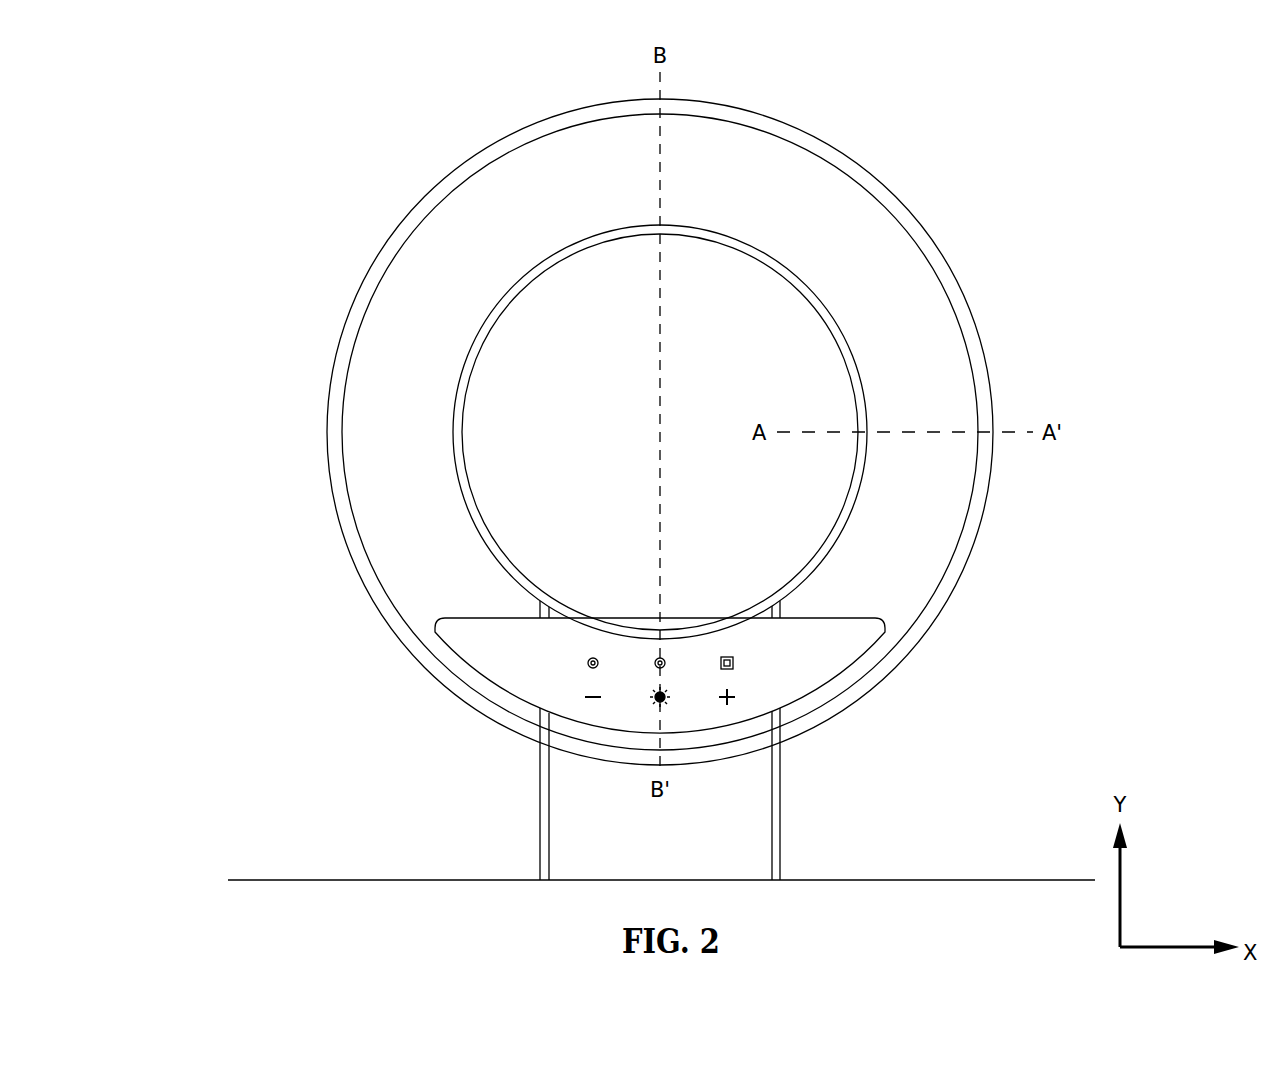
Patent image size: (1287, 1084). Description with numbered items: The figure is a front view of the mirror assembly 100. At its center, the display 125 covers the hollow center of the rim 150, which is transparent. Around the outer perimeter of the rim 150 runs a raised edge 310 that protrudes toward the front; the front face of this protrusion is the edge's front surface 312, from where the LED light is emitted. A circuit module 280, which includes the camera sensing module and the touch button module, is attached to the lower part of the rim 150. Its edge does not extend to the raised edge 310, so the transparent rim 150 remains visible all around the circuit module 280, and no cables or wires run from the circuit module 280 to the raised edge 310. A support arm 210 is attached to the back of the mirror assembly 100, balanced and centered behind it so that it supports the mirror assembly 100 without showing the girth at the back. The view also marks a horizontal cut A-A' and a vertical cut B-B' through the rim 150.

The mirror assembly 100 is at (937, 167).
The rim 150 is at (440, 247).
The raised edge 310 is at (332, 378).
The edge's front surface 312 is at (330, 460).
The display 125 is at (640, 436).
The circuit module 280 is at (786, 680).
The support arm 210 is at (562, 845).